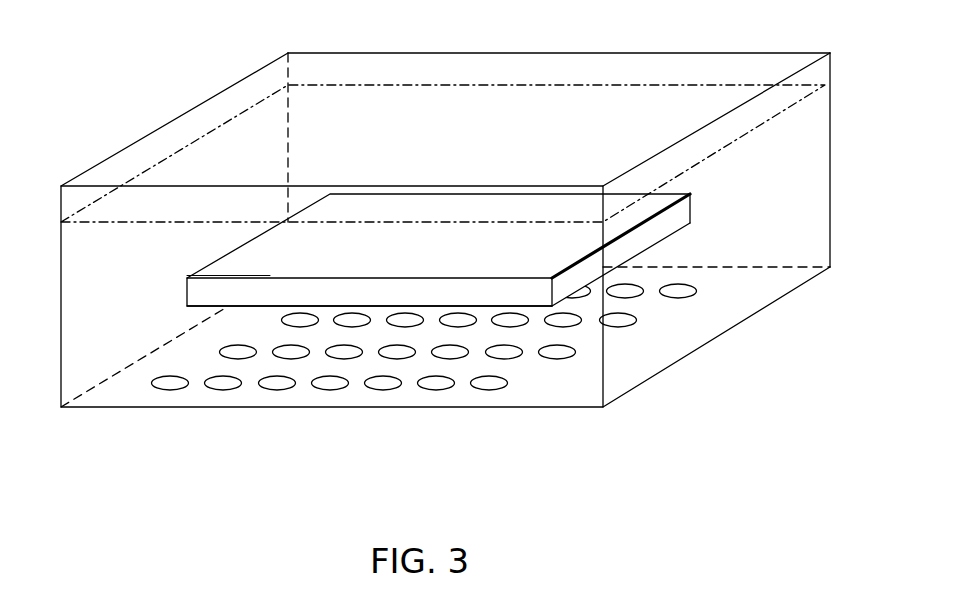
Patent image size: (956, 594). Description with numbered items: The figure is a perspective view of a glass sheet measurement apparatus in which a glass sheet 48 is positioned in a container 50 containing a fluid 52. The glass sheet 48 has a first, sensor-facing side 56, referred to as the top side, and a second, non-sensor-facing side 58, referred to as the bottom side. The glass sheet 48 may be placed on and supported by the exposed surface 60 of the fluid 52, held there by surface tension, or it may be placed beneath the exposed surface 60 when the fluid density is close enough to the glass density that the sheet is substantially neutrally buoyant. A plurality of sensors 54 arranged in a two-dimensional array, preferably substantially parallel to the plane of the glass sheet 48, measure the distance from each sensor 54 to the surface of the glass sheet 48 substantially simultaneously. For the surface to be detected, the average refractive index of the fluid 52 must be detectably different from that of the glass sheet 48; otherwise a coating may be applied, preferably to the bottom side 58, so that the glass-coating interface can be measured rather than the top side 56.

The glass sheet 48 is at (700, 203).
The container 50 is at (180, 113).
The fluid 52 is at (149, 281).
The sensor 54 is at (330, 392).
The first side 56 is at (487, 262).
The second side 58 is at (232, 306).
The exposed surface 60 is at (513, 120).